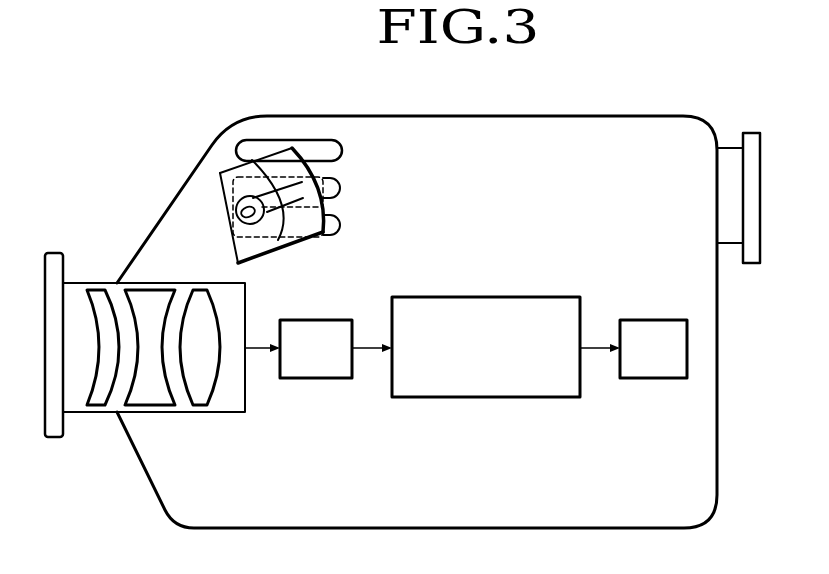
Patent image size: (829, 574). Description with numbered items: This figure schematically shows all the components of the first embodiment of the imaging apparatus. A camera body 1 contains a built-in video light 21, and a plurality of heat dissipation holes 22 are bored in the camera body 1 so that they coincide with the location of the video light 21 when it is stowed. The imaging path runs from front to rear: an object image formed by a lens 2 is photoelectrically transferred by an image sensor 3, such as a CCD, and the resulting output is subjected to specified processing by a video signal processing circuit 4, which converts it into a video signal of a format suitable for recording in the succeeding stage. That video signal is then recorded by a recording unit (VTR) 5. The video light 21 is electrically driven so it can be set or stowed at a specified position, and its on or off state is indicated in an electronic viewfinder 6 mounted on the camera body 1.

The camera body 1 is at (638, 116).
The lens 2 is at (83, 413).
The image sensor 3 is at (333, 378).
The video signal processing circuit 4 is at (555, 397).
The recording unit (VTR) 5 is at (670, 378).
The electronic viewfinder 6 is at (730, 163).
The video light 21 is at (213, 197).
The heat dissipation holes 22 is at (345, 152).